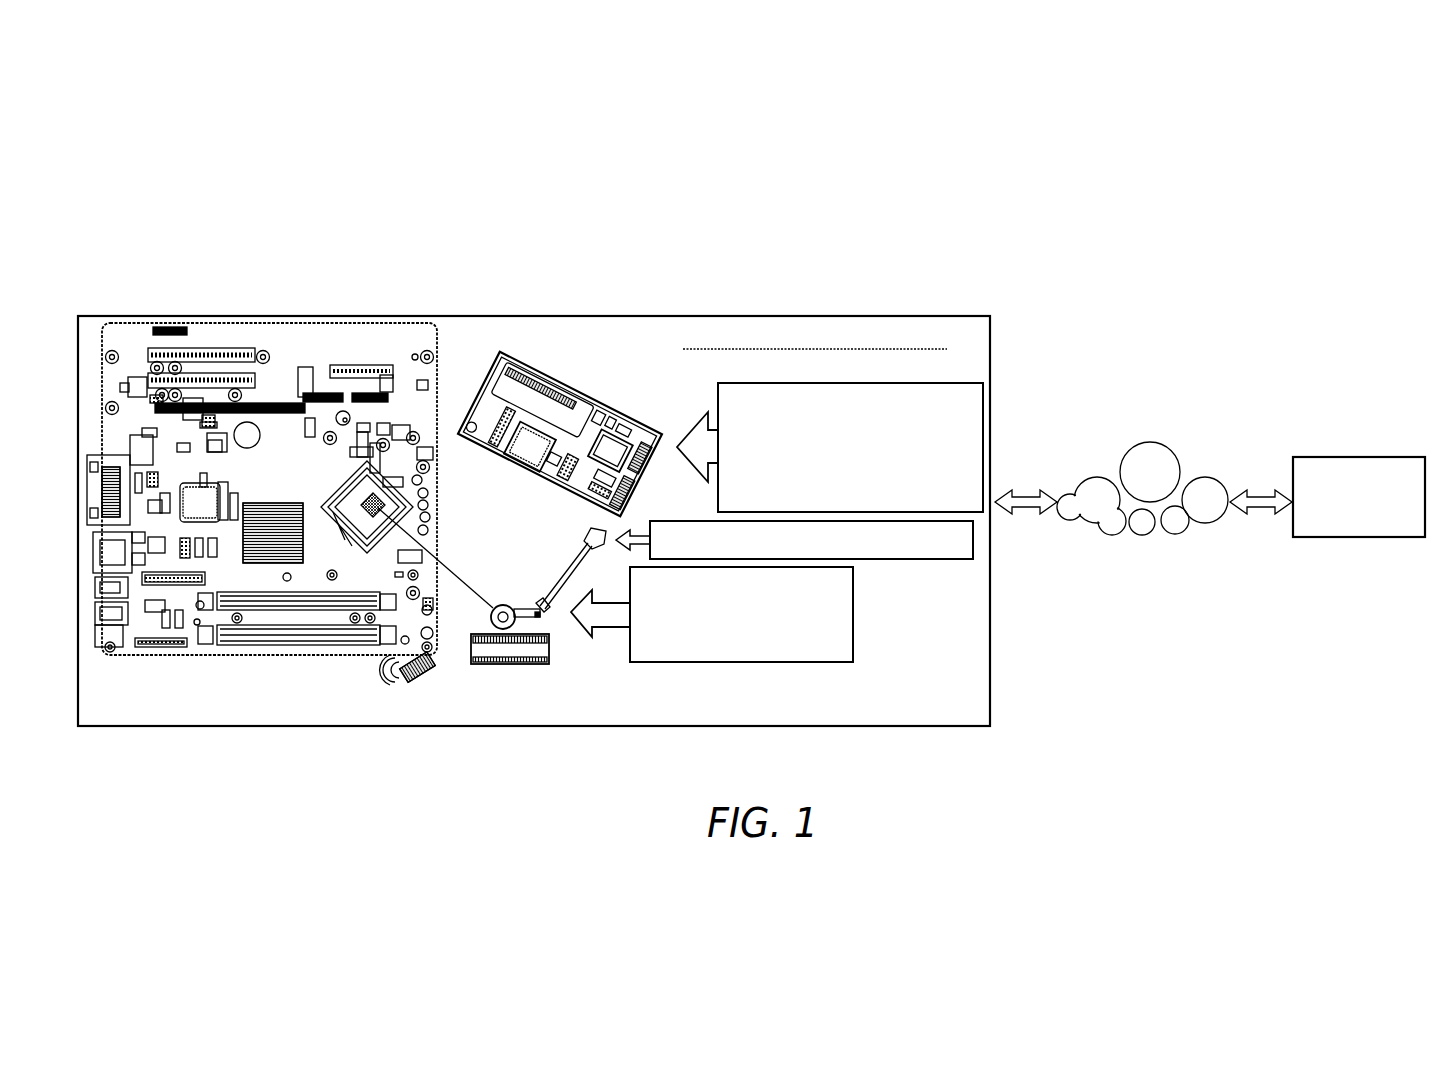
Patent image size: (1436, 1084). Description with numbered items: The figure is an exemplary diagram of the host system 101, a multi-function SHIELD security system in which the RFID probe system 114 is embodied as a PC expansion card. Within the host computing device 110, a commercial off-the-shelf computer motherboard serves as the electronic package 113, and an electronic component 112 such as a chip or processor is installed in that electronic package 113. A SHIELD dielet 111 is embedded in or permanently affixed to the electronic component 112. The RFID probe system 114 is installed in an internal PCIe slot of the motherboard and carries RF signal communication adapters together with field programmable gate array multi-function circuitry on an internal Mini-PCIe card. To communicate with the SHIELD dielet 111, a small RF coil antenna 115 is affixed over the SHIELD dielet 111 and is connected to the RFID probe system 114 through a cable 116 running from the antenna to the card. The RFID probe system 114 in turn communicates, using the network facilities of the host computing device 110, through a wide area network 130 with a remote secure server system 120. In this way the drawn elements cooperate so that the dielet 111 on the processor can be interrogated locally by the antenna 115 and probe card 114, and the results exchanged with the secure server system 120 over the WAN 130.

The host system 101 is at (1087, 257).
The host computing device 110 is at (788, 305).
The SHIELD dielet 111 is at (386, 525).
The electronic component 112 is at (428, 660).
The electronic package 113 is at (158, 328).
The RFID probe system 114 is at (573, 402).
The RF antenna 115 is at (530, 617).
The cable 116 is at (575, 568).
The secure server system 120 is at (1358, 532).
The wide area network (WAN) 130 is at (1185, 460).